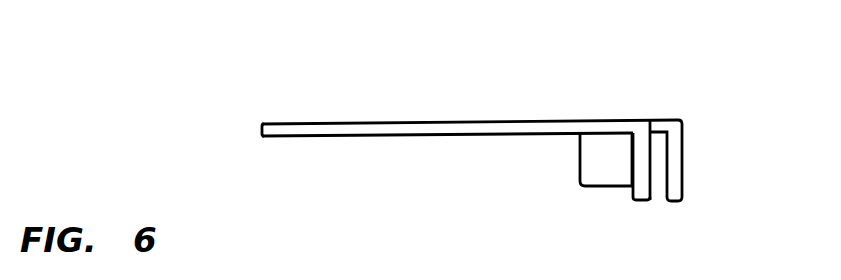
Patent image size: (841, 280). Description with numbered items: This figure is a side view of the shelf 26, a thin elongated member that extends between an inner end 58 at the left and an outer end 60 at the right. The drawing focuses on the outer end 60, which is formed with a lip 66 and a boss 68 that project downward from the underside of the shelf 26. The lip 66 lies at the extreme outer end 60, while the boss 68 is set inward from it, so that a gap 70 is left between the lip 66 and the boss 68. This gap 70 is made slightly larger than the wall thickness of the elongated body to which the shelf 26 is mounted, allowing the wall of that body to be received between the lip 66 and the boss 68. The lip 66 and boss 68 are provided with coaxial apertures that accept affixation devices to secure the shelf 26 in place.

The shelf 26 is at (435, 98).
The inner end 58 is at (262, 131).
The outer end 60 is at (685, 132).
The lip 66 is at (673, 200).
The boss 68 is at (588, 177).
The gap 70 is at (659, 190).